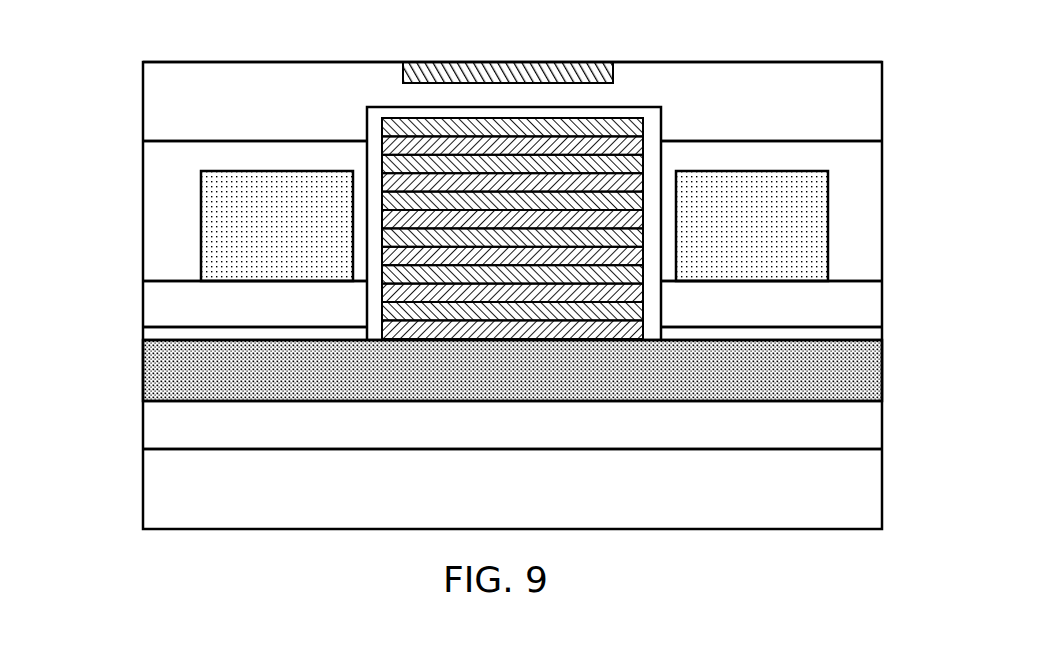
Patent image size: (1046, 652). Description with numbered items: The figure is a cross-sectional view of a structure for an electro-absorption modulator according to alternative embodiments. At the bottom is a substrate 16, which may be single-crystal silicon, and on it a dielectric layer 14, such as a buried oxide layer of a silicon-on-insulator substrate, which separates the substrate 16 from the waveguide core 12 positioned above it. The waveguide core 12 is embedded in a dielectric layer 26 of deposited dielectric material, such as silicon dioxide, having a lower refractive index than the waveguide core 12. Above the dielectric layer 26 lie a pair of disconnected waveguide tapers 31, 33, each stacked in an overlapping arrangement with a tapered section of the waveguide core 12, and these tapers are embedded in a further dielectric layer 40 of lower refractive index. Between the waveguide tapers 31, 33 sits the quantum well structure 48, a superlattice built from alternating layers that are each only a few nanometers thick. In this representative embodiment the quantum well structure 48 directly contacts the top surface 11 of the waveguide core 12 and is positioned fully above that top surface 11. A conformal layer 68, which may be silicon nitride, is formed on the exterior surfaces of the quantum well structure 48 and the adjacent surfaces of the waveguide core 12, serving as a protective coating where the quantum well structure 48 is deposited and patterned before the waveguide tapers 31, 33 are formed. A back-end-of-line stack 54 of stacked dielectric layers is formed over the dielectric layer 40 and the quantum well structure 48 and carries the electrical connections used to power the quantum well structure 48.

The top surface 11 is at (810, 337).
The waveguide core 12 is at (195, 371).
The dielectric layer 14 is at (195, 423).
The substrate 16 is at (195, 493).
The dielectric layer 26 is at (195, 317).
The waveguide taper 31 is at (247, 235).
The waveguide taper 33 is at (778, 232).
The dielectric layer 40 is at (178, 178).
The quantum well structure 48 is at (373, 87).
The back-end-of-line stack 54 is at (178, 81).
The conformal layer 68 is at (368, 122).